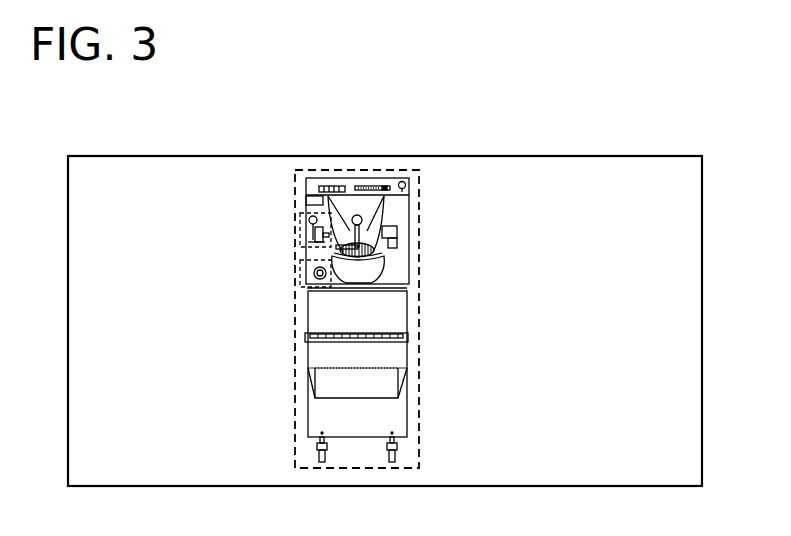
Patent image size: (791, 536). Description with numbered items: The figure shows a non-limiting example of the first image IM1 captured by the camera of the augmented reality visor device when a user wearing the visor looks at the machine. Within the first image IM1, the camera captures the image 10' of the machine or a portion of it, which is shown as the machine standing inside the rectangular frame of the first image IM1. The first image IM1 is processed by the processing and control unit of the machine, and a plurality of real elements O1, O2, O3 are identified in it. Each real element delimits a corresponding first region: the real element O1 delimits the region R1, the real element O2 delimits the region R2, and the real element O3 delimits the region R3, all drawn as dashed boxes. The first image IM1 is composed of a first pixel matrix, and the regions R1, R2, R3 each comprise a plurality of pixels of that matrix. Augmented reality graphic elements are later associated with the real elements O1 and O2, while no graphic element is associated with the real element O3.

The image of the machine 10' is at (290, 285).
The first image IM1 is at (603, 178).
The first region R1 is at (297, 228).
The first region R2 is at (290, 282).
The first region R3 is at (390, 170).
The real element O1 is at (313, 238).
The real element O2 is at (303, 270).
The real element O3 is at (402, 277).